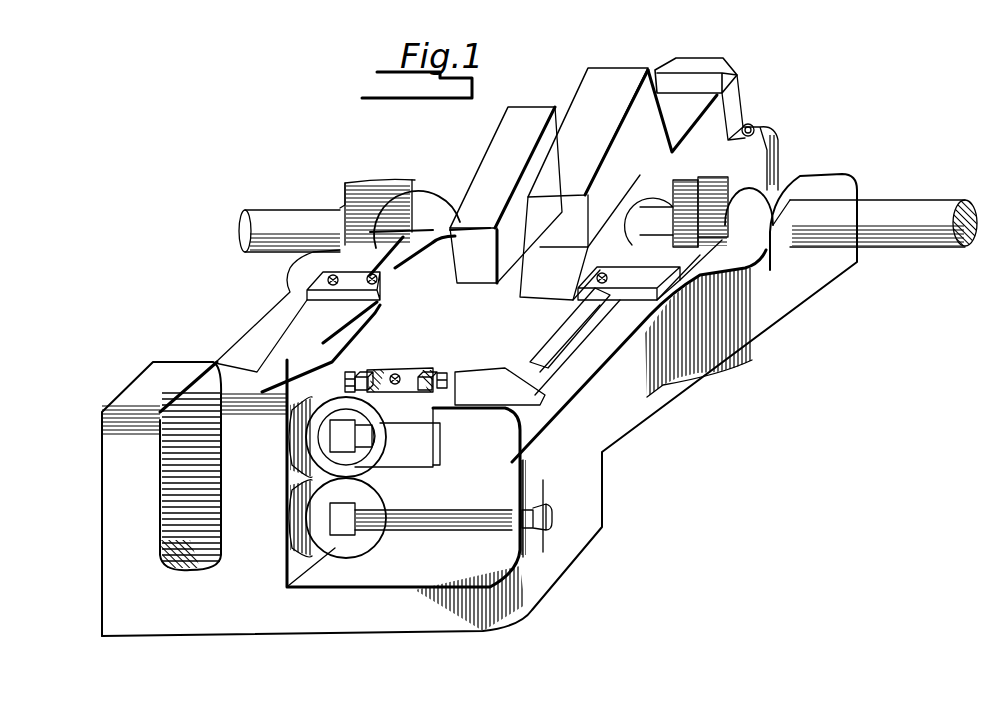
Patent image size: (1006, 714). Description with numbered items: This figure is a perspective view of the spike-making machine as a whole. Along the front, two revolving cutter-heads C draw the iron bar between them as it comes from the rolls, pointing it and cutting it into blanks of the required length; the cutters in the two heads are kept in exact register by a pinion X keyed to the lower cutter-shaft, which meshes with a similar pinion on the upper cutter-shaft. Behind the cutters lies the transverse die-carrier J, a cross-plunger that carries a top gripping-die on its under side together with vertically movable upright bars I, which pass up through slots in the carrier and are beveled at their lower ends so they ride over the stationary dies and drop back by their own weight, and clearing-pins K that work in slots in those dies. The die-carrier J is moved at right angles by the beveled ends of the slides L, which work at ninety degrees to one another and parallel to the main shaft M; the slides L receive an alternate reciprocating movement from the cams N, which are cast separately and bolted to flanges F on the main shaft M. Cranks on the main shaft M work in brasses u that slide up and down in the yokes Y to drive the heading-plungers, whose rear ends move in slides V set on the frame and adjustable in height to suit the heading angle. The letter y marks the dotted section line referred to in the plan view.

The flange F is at (506, 214).
The pinion X is at (237, 505).
The cutter-head C is at (352, 460).
The slide L is at (570, 345).
The clearing-pin K is at (406, 369).
The upright bar I is at (398, 367).
The transverse die-carrier J is at (500, 386).
The section line y y is at (506, 195).
The yoke Y is at (584, 184).
The slide V is at (733, 105).
The cam N is at (685, 207).
The brass u is at (649, 210).
The main shaft M is at (875, 211).